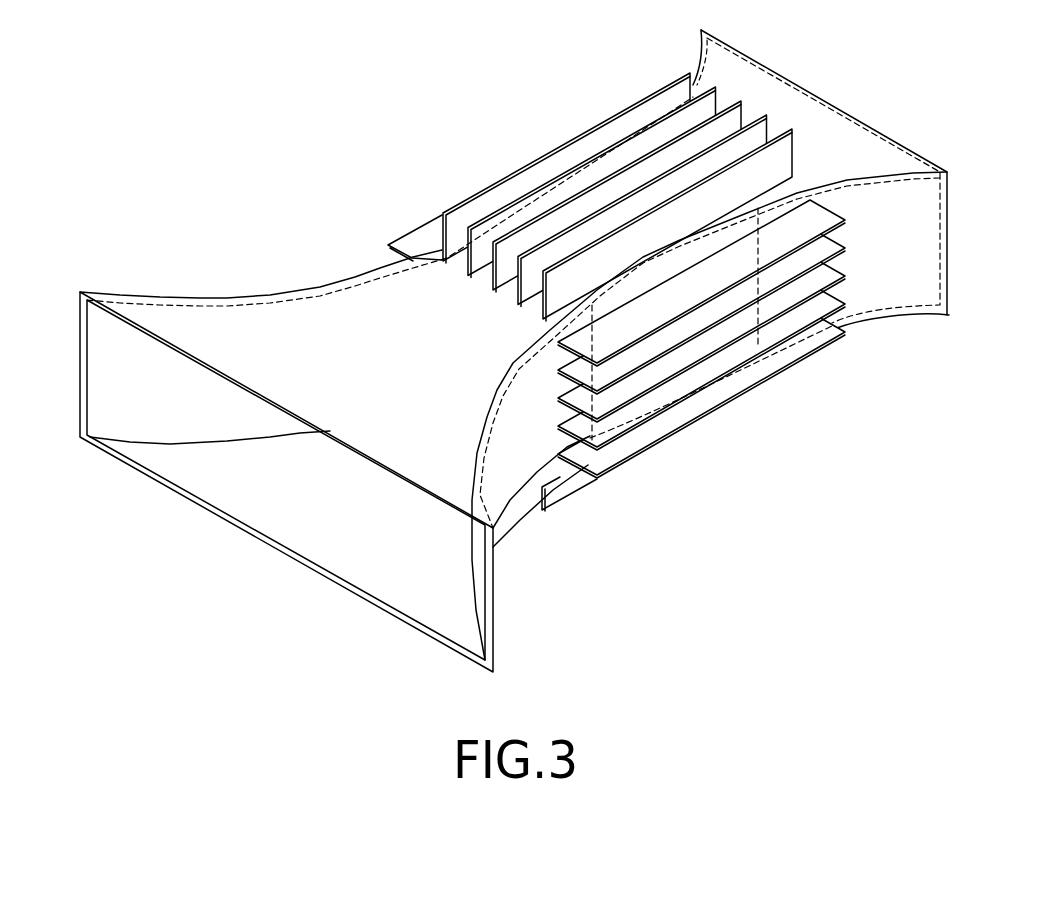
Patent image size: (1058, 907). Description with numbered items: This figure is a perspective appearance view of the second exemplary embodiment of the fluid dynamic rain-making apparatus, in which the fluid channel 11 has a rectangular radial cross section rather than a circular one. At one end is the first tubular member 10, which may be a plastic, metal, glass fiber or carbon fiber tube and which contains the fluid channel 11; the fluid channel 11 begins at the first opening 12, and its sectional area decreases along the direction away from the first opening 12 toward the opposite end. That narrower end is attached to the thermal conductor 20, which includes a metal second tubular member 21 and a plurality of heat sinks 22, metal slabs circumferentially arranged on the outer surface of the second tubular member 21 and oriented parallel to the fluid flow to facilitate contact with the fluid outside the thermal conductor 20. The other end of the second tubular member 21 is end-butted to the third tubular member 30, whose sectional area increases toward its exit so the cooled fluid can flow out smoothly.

The first tubular member 10 is at (278, 292).
The fluid channel 11 is at (296, 530).
The first opening 12 is at (82, 340).
The thermal conductor 20 is at (616, 299).
The second tubular member 21 is at (647, 268).
The heat sinks 22 is at (722, 400).
The third tubular member 30 is at (887, 313).